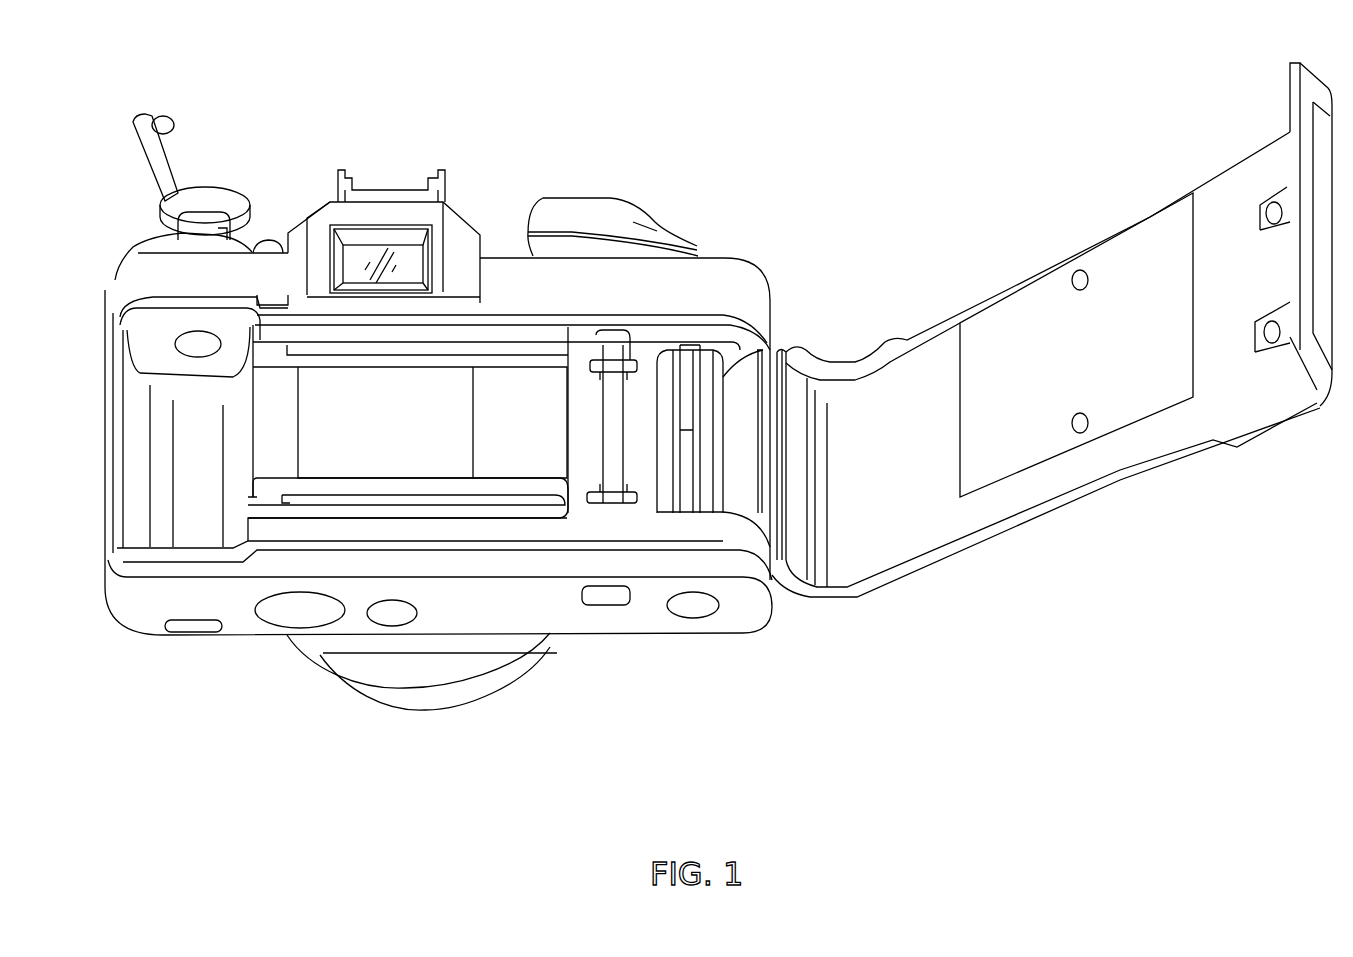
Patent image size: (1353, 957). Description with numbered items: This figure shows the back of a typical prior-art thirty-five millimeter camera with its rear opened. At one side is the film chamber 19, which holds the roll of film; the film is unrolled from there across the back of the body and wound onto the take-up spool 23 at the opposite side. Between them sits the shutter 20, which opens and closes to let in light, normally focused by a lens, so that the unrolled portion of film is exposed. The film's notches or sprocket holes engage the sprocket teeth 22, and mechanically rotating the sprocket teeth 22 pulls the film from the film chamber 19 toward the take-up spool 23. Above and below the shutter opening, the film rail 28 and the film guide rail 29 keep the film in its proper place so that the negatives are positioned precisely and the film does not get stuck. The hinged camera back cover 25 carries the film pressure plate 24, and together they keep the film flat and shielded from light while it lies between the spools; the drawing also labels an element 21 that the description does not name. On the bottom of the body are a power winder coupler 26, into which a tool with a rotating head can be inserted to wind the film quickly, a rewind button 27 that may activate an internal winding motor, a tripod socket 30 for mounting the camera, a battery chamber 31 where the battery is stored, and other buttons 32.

The film chamber 19 is at (197, 477).
The shutter 20 is at (347, 410).
The viewfinder eyepiece 21 is at (432, 265).
The sprocket teeth 22 is at (617, 350).
The take-up spool 23 is at (687, 365).
The film pressure plate 24 is at (1037, 317).
The camera back cover 25 is at (1270, 250).
The power winder coupler 26 is at (707, 605).
The rewind button 27 is at (607, 600).
The film rail 28 is at (510, 485).
The film guide rail 29 is at (470, 513).
The tripod socket 30 is at (397, 615).
The battery chamber 31 is at (277, 608).
The other buttons 32 is at (185, 627).